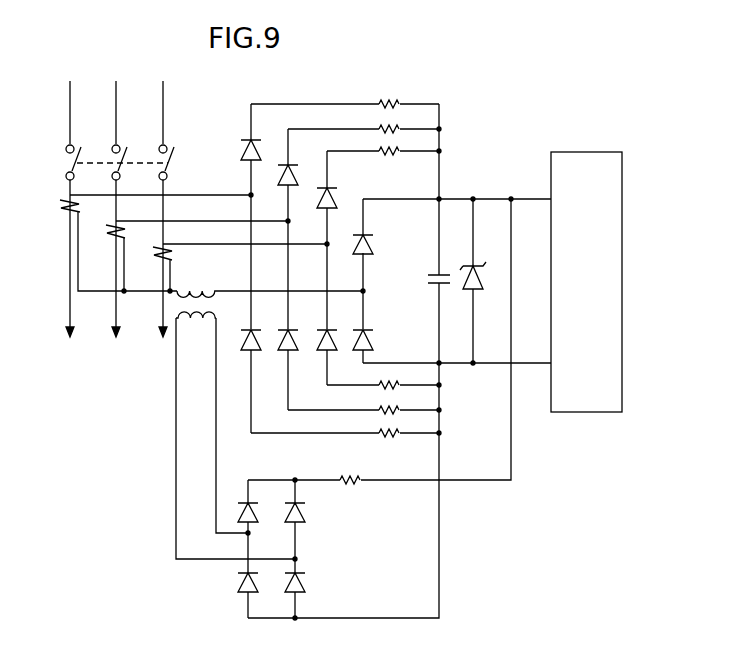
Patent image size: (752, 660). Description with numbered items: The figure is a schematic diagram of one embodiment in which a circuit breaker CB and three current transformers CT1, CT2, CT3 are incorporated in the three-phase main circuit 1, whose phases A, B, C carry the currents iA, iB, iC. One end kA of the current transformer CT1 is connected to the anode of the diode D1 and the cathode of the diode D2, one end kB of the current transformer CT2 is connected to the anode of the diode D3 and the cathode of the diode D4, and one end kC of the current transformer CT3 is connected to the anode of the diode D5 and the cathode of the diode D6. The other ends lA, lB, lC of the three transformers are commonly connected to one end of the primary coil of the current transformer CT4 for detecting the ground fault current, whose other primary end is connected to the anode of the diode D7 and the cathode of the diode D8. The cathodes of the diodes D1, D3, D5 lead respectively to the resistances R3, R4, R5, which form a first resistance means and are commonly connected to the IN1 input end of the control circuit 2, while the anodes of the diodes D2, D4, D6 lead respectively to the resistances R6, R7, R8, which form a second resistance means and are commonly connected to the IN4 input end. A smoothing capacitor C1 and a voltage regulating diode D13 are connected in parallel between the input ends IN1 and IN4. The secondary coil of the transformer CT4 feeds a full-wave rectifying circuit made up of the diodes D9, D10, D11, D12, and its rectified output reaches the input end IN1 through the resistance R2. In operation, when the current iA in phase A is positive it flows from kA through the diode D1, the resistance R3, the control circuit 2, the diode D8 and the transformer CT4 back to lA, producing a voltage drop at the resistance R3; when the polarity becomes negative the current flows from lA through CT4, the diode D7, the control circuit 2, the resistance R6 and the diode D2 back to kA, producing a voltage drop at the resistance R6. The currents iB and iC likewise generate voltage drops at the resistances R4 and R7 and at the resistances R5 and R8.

The main circuit 1 is at (134, 55).
The control circuit 2 is at (584, 152).
The A phase A is at (69, 103).
The B phase B is at (115, 103).
The C phase C is at (162, 103).
The circuit breaker CB is at (69, 163).
The current transformer CT1 is at (63, 207).
The current transformer CT2 is at (112, 240).
The current transformer CT3 is at (158, 262).
The current transformer for detecting the ground fault current CT4 is at (198, 284).
The one end of the current transformer CT1 kA is at (161, 187).
The other end of the current transformer CT1 lA is at (127, 248).
The one end of the current transformer CT2 kB is at (203, 213).
The other end of the current transformer CT2 lB is at (132, 260).
The one end of the current transformer CT3 kC is at (246, 236).
The other end of the current transformer CT3 lC is at (179, 272).
The current in the A phase iA is at (68, 273).
The current in the B phase iB is at (114, 273).
The current in the C phase iC is at (161, 273).
The diode D1 is at (258, 150).
The diode D2 is at (256, 350).
The diode D3 is at (296, 176).
The diode D4 is at (294, 350).
The diode D5 is at (334, 198).
The diode D6 is at (334, 350).
The diode D7 is at (370, 243).
The diode D8 is at (374, 340).
The diode D9 is at (256, 511).
The diode D10 is at (256, 581).
The diode D11 is at (302, 511).
The diode D12 is at (302, 581).
The voltage regulating diode D13 is at (466, 282).
The resistance R2 is at (364, 479).
The resistance R3 is at (392, 101).
The resistance R4 is at (400, 123).
The resistance R5 is at (400, 146).
The resistance R6 is at (400, 429).
The resistance R7 is at (400, 404).
The resistance R8 is at (400, 381).
The smoothing capacitor C1 is at (432, 283).
The IN1 input end IN1 is at (470, 199).
The IN4 input end IN4 is at (470, 364).